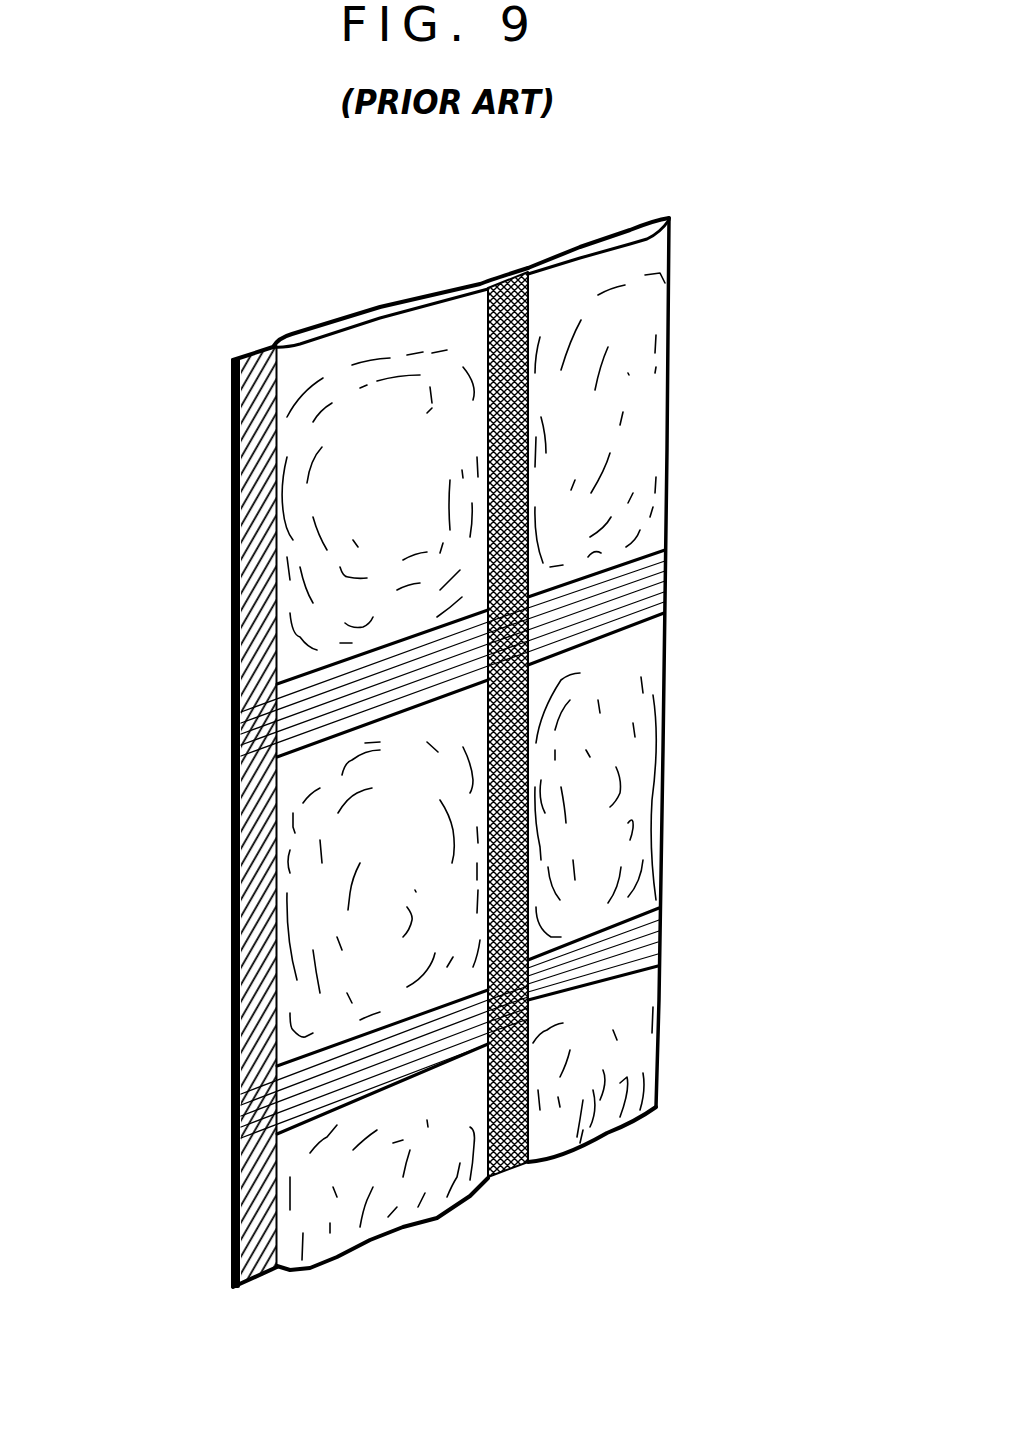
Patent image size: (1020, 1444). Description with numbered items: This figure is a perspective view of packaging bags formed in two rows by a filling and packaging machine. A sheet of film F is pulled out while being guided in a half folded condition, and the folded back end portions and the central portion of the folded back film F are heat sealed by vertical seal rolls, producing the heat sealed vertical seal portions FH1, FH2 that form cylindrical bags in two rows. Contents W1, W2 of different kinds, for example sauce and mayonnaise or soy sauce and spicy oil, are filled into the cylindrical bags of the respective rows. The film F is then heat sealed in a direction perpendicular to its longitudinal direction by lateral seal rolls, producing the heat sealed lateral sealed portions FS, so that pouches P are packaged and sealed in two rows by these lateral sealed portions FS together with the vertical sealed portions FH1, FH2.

The film F is at (375, 318).
The vertical seal portion FH1 is at (252, 553).
The vertical seal portion FH2 is at (515, 278).
The lateral sealed portion FS is at (650, 600).
The contents W1 is at (328, 437).
The contents W2 is at (655, 390).
The pouch P is at (682, 822).